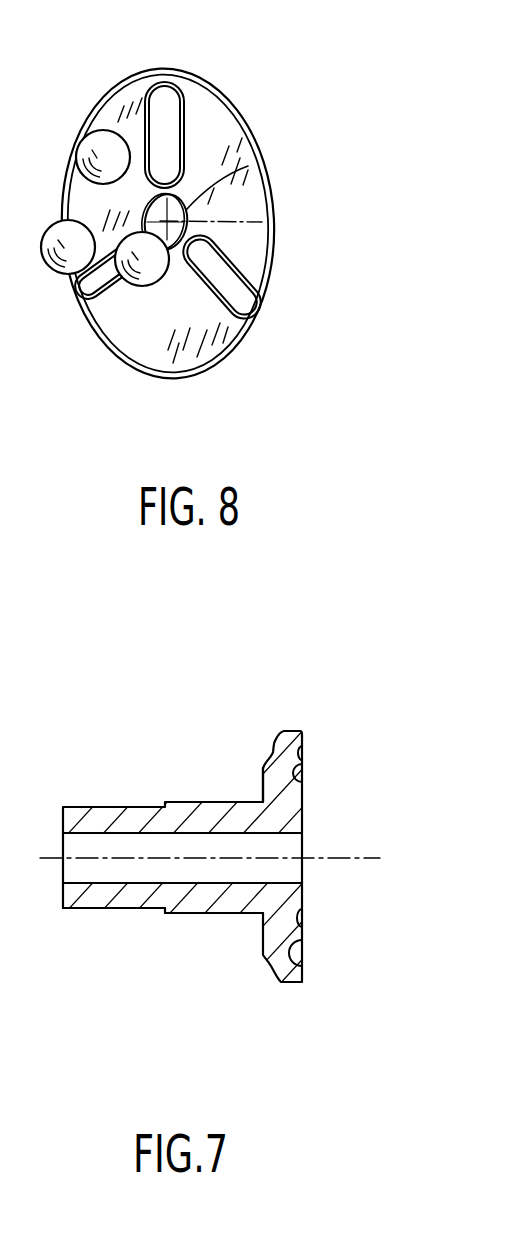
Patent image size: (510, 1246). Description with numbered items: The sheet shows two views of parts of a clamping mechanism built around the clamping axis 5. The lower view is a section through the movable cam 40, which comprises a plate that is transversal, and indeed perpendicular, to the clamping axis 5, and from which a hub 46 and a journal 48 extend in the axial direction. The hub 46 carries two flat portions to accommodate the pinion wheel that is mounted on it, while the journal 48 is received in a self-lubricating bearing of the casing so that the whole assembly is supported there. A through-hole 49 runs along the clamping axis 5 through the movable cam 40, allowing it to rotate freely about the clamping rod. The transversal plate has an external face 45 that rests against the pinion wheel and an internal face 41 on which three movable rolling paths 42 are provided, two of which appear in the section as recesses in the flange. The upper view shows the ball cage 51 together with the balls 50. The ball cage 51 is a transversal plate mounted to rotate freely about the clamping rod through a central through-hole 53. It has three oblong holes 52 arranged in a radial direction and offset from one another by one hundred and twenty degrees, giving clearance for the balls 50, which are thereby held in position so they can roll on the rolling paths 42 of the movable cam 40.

In FIG. 8, the clamping axis 5 is at (273, 222).
In FIG. 7, the clamping axis 5 is at (343, 858).
In FIG. 8, the balls 50 is at (100, 147).
In FIG. 8, the ball cage 51 is at (272, 204).
In FIG. 8, the oblong holes 52 is at (168, 103).
In FIG. 8, the through-hole 53 is at (188, 206).
In FIG. 7, the movable cam 40 is at (182, 782).
In FIG. 7, the internal face 41 is at (303, 742).
In FIG. 7, the movable rolling paths 42 is at (303, 775).
In FIG. 7, the external face 45 is at (262, 778).
In FIG. 7, the hub 46 is at (197, 915).
In FIG. 7, the journal 48 is at (110, 911).
In FIG. 7, the through-hole 49 is at (292, 869).